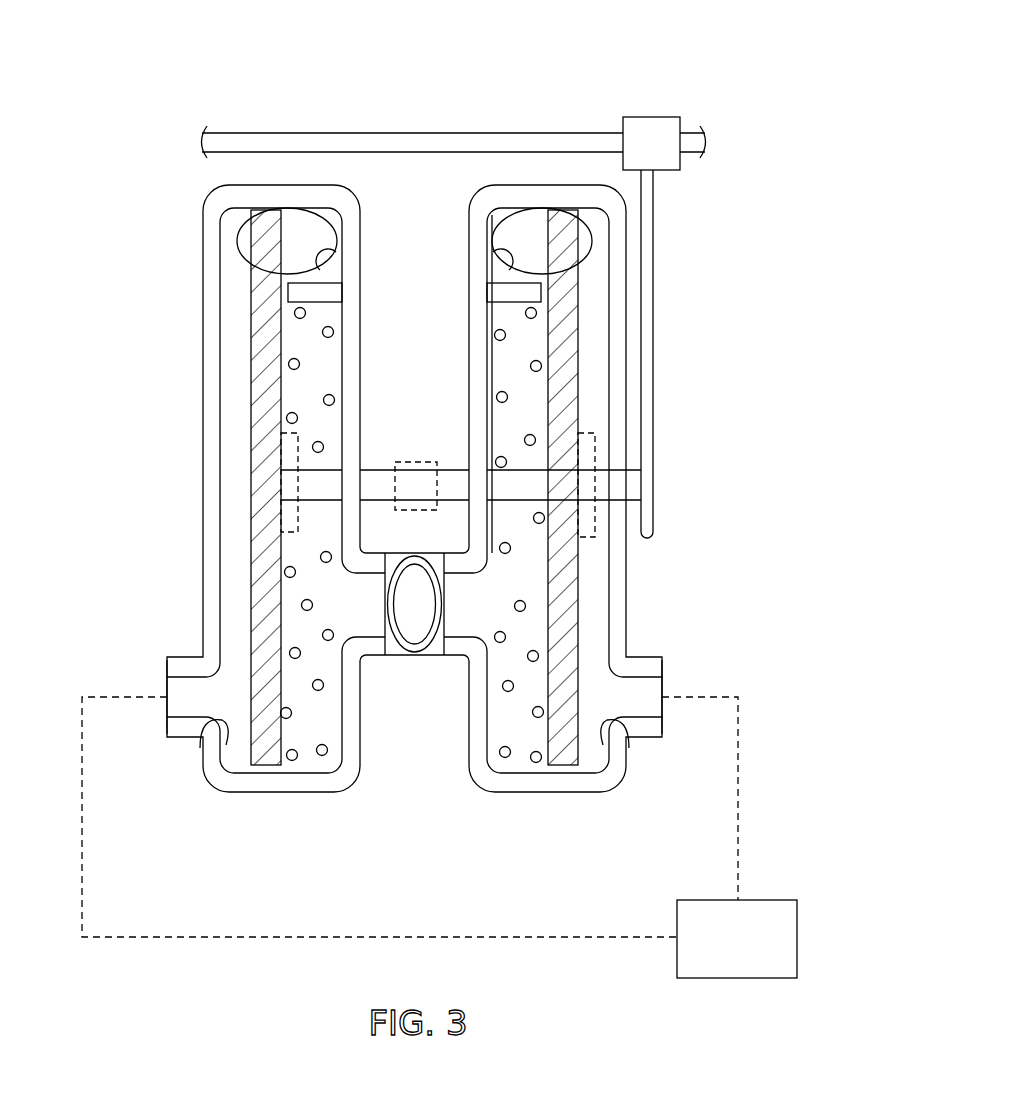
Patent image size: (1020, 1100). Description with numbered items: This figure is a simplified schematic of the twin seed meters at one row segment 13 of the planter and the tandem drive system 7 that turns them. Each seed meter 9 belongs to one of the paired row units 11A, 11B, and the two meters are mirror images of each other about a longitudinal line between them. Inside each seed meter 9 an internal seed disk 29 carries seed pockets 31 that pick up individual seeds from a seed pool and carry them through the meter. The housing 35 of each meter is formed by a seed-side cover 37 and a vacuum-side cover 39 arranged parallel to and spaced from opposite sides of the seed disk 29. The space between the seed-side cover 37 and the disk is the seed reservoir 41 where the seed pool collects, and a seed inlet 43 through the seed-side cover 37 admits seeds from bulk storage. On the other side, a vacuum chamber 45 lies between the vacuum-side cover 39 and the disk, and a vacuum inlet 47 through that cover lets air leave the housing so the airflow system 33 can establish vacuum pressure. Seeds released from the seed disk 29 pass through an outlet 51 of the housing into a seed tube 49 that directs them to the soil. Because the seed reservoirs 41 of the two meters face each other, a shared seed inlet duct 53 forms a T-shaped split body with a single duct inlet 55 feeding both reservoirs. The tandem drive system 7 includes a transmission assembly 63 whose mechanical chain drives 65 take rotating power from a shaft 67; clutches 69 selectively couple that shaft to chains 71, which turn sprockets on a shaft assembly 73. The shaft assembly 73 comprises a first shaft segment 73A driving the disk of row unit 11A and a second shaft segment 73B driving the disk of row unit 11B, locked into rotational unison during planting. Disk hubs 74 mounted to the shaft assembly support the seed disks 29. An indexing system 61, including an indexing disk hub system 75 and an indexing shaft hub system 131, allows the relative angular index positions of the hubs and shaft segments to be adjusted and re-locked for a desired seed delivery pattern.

The tandem drive system 7 is at (700, 108).
The seed meter 9 is at (192, 800).
The first row unit 11A is at (280, 773).
The second row unit 11B is at (546, 773).
The row segment 13 is at (440, 98).
The seed disk 29 is at (252, 595).
The seed pockets 31 is at (290, 250).
The airflow system 33 is at (764, 900).
The housing 35 is at (287, 208).
The seed-side cover 37 is at (338, 182).
The vacuum-side cover 39 is at (221, 182).
The seed reservoir 41 is at (325, 722).
The seed inlet 43 is at (465, 628).
The vacuum chamber 45 is at (222, 632).
The vacuum inlet 47 is at (170, 688).
The seed tube 49 is at (318, 238).
The outlet 51 is at (332, 257).
The seed inlet duct 53 is at (394, 555).
The duct inlet 55 is at (420, 604).
The indexing system 61 is at (593, 433).
The transmission assembly 63 is at (656, 300).
The mechanical chain drives 65 is at (656, 340).
The shaft 67 is at (385, 136).
The clutches 69 is at (665, 124).
The chains 71 is at (656, 378).
The shaft assembly 73 is at (633, 468).
The first shaft segment 73A is at (328, 480).
The second shaft segment 73B is at (604, 468).
The disk hub 74 is at (299, 440).
The indexing disk hub system 75 is at (305, 527).
The indexing shaft hub system 131 is at (431, 458).